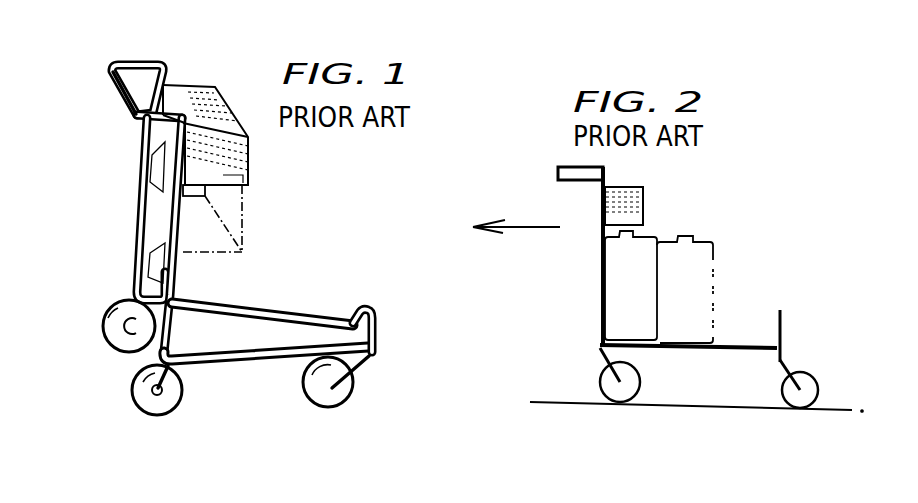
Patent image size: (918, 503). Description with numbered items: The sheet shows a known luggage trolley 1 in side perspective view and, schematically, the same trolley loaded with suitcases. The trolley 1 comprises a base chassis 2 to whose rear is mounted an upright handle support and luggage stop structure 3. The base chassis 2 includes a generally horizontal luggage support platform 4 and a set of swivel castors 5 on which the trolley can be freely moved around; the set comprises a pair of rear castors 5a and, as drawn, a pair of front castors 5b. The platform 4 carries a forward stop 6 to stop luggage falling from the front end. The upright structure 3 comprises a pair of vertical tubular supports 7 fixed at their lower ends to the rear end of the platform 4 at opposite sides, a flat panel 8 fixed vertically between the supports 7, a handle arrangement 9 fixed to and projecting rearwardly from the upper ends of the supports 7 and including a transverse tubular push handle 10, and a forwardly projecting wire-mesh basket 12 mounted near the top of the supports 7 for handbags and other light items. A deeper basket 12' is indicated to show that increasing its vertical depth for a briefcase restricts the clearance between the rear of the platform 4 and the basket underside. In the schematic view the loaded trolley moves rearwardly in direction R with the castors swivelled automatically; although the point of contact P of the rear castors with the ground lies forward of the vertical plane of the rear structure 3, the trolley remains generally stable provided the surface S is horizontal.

In FIG. 1, the luggage trolley 1 is at (323, 227).
In FIG. 1, the base chassis 2 is at (277, 300).
In FIG. 1, the upright handle support and luggage stop structure 3 is at (140, 163).
In FIG. 1, the luggage support platform 4 is at (227, 362).
In FIG. 1, the swivel castors 5 is at (149, 421).
In FIG. 1, the rear castors 5a is at (110, 338).
In FIG. 1, the front castor 5b is at (348, 399).
In FIG. 1, the forward stop 6 is at (362, 307).
In FIG. 1, the vertical tubular supports 7 is at (180, 270).
In FIG. 1, the flat panel 8 is at (152, 223).
In FIG. 1, the handle arrangement 9 is at (138, 54).
In FIG. 1, the transverse tubular push handle 10 is at (111, 79).
In FIG. 1, the basket 12 is at (205, 110).
In FIG. 1, the deeper basket 12' is at (254, 202).
In FIG. 2, the rearward direction R is at (523, 223).
In FIG. 2, the point of contact P is at (623, 403).
In FIG. 2, the surface S is at (667, 407).